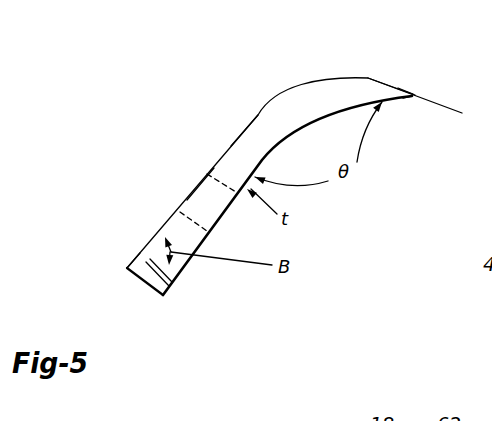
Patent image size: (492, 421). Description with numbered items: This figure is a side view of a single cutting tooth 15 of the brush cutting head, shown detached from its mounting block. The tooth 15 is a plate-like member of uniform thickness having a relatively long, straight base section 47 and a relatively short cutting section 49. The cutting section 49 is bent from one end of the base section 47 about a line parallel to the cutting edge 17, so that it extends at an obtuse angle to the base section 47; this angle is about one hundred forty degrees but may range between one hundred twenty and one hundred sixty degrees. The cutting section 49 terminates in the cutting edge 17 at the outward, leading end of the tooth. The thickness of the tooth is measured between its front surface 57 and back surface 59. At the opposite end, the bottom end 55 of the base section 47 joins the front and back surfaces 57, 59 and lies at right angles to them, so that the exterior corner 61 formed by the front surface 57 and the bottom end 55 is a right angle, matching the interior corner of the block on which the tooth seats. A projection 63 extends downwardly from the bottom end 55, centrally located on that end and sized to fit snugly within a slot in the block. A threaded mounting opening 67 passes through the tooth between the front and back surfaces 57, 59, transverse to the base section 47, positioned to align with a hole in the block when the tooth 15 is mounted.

The cutting tooth 15 is at (207, 155).
The cutting edge 17 is at (415, 95).
The base section 47 is at (225, 227).
The cutting section 49 is at (301, 83).
The bottom end 55 is at (153, 283).
The front surface 57 is at (403, 98).
The back surface 59 is at (231, 146).
The exterior corner 61 is at (148, 261).
The projection 63 is at (398, 88).
The mounting opening 67 is at (184, 214).